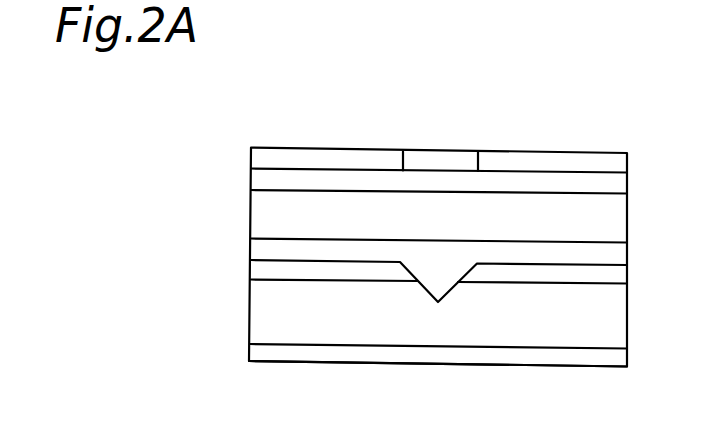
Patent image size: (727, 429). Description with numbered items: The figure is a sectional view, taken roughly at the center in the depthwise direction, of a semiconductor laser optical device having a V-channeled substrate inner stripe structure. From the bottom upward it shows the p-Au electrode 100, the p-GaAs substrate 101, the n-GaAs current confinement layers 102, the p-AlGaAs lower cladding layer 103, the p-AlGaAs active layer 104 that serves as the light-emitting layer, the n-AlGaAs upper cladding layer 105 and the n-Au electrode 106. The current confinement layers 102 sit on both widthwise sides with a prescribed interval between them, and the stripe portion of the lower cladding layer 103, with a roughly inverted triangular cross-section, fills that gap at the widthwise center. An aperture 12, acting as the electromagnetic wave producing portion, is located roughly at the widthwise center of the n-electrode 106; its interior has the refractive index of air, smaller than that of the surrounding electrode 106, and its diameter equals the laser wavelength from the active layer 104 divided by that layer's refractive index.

The aperture 12 is at (448, 157).
The p-Au electrode 100 is at (266, 357).
The p-GaAs substrate 101 is at (251, 303).
The current confinement layers 102 is at (251, 268).
The lower cladding layer 103 is at (251, 251).
The active layer 104 is at (262, 212).
The upper cladding layer 105 is at (252, 176).
The n-Au electrode 106 is at (263, 155).